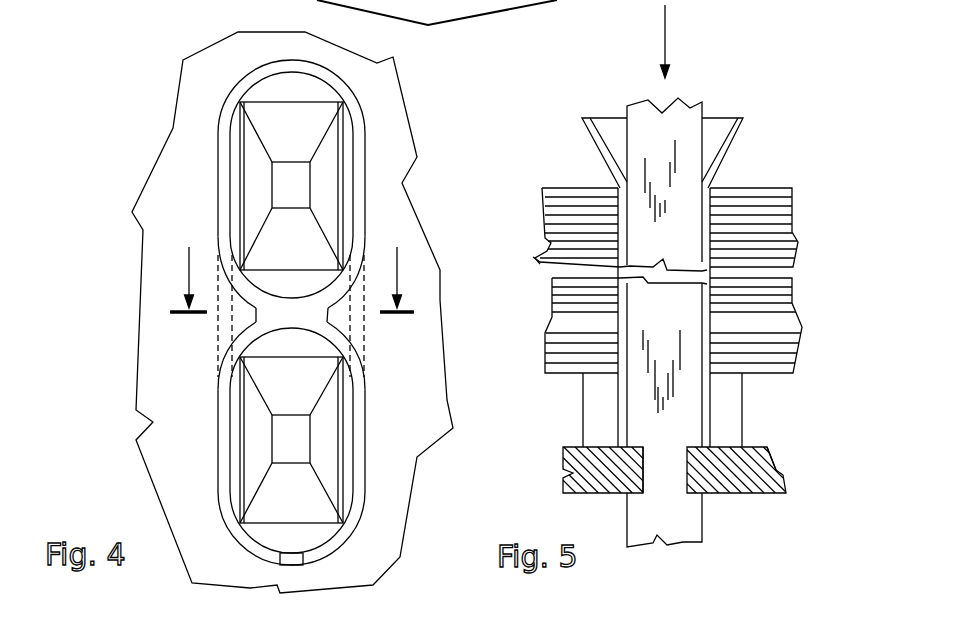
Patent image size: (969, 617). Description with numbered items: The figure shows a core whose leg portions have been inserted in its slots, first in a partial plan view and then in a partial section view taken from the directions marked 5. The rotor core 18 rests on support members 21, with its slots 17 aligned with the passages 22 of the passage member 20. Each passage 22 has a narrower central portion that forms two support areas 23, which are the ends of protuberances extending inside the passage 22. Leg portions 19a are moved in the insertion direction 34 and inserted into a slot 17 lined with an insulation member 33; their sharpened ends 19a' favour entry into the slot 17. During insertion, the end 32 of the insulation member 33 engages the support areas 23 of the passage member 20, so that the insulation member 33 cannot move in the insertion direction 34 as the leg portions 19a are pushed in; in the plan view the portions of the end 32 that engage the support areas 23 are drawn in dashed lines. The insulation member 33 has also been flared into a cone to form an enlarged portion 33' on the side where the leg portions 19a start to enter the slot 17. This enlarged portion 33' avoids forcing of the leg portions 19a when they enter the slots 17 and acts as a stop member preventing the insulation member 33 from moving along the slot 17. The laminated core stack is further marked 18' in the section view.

In FIG. 4, the section line 5 is at (189, 262).
In FIG. 5, the slot 17 is at (713, 363).
In FIG. 5, the rotor core 18 is at (626, 204).
In FIG. 5, the laminated core portion 18' is at (549, 203).
In FIG. 4, the leg portion 19a is at (253, 287).
In FIG. 5, the leg portion 19a is at (631, 242).
In FIG. 4, the sharpened end 19a' is at (318, 312).
In FIG. 4, the passage member 20 is at (274, 312).
In FIG. 5, the passage member 20 is at (847, 433).
In FIG. 5, the support member 21 is at (600, 412).
In FIG. 4, the passage 22 is at (217, 200).
In FIG. 5, the passage 22 is at (687, 492).
In FIG. 4, the support area 23 is at (250, 313).
In FIG. 5, the support area 23 is at (578, 472).
In FIG. 4, the end of insulation member 32 is at (217, 350).
In FIG. 5, the end of insulation member 32 is at (627, 446).
In FIG. 4, the insulation member 33 is at (220, 312).
In FIG. 5, the insulation member 33 is at (690, 317).
In FIG. 5, the enlarged portion 33' is at (700, 145).
In FIG. 5, the insertion direction 34 is at (665, 30).